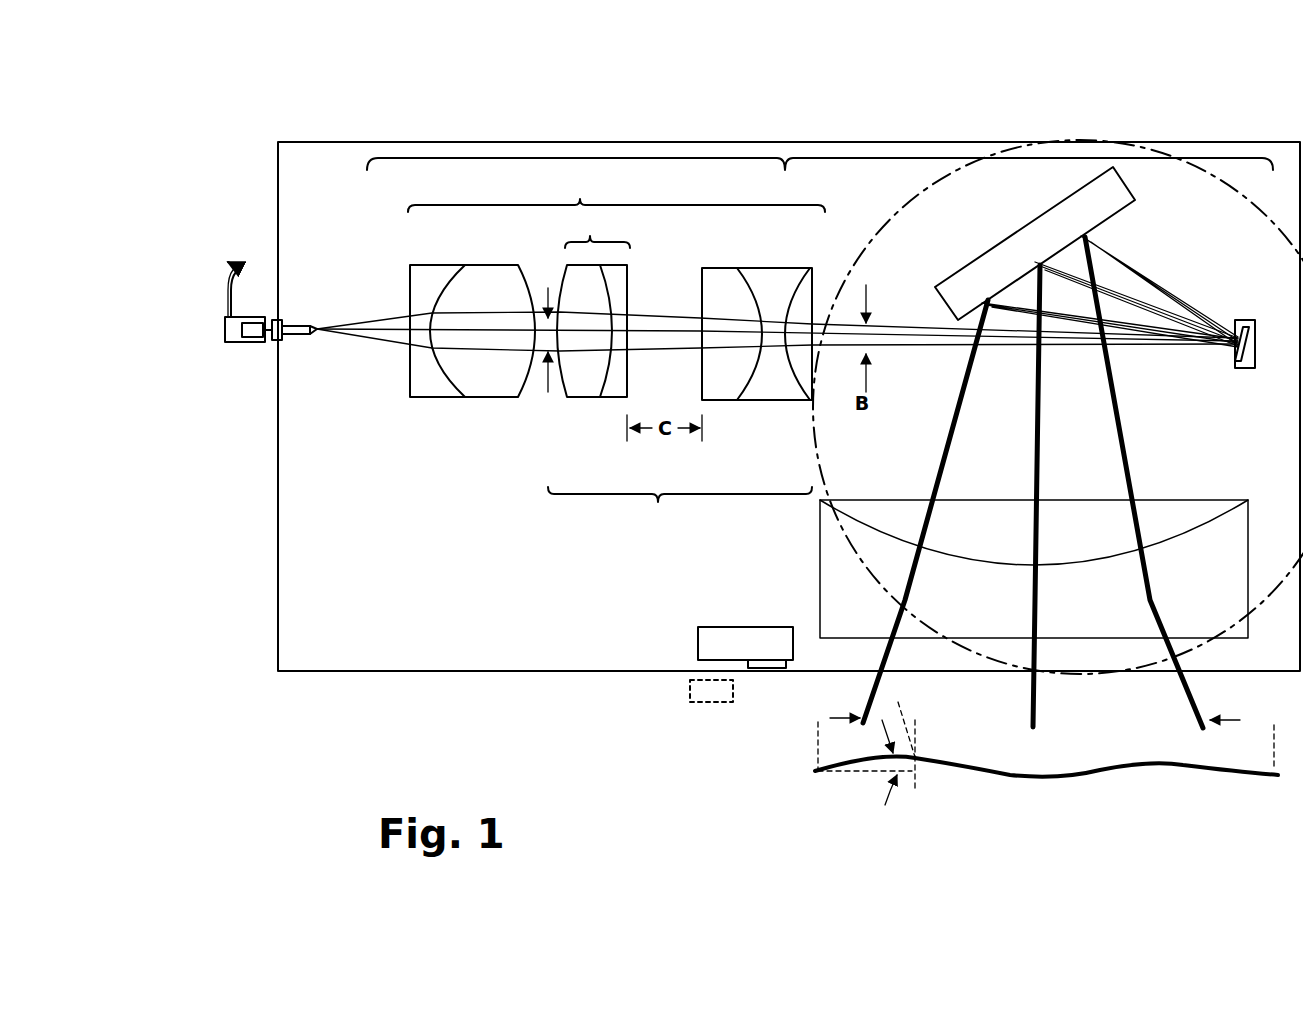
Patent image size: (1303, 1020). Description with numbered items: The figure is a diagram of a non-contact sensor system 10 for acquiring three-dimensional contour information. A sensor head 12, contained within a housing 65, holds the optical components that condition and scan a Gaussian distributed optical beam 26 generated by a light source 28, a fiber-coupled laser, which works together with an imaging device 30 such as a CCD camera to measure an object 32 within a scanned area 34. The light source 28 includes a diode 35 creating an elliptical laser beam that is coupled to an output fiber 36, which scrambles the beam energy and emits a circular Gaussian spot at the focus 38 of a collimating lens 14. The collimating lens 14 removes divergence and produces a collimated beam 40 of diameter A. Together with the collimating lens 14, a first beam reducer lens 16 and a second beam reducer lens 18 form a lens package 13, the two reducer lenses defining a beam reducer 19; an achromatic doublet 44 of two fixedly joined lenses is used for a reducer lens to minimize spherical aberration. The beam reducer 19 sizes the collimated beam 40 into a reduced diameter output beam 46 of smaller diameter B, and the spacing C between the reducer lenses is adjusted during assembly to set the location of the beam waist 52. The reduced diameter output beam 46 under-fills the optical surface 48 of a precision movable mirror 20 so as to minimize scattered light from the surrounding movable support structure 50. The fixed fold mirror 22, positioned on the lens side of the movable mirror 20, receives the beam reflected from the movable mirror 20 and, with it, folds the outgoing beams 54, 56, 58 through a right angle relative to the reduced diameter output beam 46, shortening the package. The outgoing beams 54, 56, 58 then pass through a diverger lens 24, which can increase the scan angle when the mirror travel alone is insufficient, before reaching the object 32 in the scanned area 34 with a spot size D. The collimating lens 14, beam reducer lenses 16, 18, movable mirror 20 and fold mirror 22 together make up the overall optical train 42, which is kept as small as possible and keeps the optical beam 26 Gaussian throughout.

The sensor system 10 is at (1164, 112).
The sensor head 12 is at (808, 136).
The lens package 13 is at (616, 194).
The collimating lens 14 is at (446, 400).
The first beam reducer lens 16 is at (585, 400).
The second beam reducer lens 18 is at (727, 403).
The beam reducer 19 is at (680, 508).
The precision movable mirror 20 is at (1250, 318).
The fold mirror 22 is at (990, 265).
The diverger lens 24 is at (890, 502).
The Gaussian distributed optical beam 26 is at (352, 346).
The light source 28 is at (236, 345).
The imaging device 30 is at (706, 637).
The object 32 is at (942, 753).
The scanned area 34 is at (832, 739).
The diode 35 is at (255, 317).
The output fiber 36 is at (302, 318).
The focus 38 is at (320, 338).
The collimated beam 40 is at (545, 352).
The optical train 42 is at (820, 175).
The achromatic doublet 44 is at (597, 229).
The reduced diameter output beam 46 is at (892, 356).
The optical surface 48 is at (1231, 356).
The movable support structure 50 is at (1250, 368).
The beam waist 52 is at (1231, 323).
The outgoing beam 54 is at (955, 458).
The outgoing beam 56 is at (1043, 480).
The outgoing beam 58 is at (1132, 458).
The housing 65 is at (477, 673).